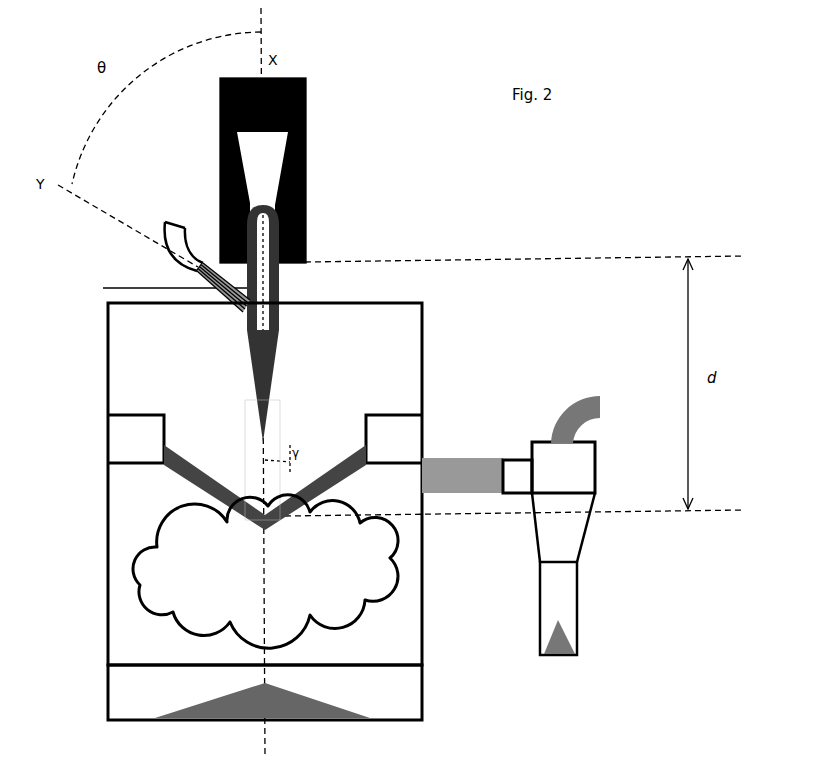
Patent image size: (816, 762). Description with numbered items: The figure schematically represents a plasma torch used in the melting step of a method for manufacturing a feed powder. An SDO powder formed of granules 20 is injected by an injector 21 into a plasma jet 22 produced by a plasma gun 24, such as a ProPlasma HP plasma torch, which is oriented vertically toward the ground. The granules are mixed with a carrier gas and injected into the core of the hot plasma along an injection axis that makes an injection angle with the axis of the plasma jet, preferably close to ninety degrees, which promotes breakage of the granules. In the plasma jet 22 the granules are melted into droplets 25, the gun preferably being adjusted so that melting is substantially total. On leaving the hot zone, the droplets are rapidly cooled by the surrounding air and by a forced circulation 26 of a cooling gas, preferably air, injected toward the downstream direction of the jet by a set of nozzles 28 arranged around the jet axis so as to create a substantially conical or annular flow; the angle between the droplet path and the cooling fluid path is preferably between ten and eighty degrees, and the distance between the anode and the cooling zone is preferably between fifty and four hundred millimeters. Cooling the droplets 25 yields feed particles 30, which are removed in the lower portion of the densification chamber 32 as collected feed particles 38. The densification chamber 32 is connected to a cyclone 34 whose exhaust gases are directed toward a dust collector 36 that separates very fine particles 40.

The granules 20 is at (158, 291).
The injector 21 is at (178, 260).
The plasma jet 22 is at (278, 283).
The plasma gun 24 is at (263, 170).
The droplets 25 is at (253, 448).
The forced circulation of a cooling gas 26 is at (237, 500).
The set of nozzles 28 is at (172, 460).
The feed particles 30 is at (225, 583).
The densification chamber 32 is at (108, 618).
The cyclone 34 is at (588, 510).
The dust collector 36 is at (600, 406).
The collected feed particles 38 is at (240, 702).
The very fine particles 40 is at (560, 632).